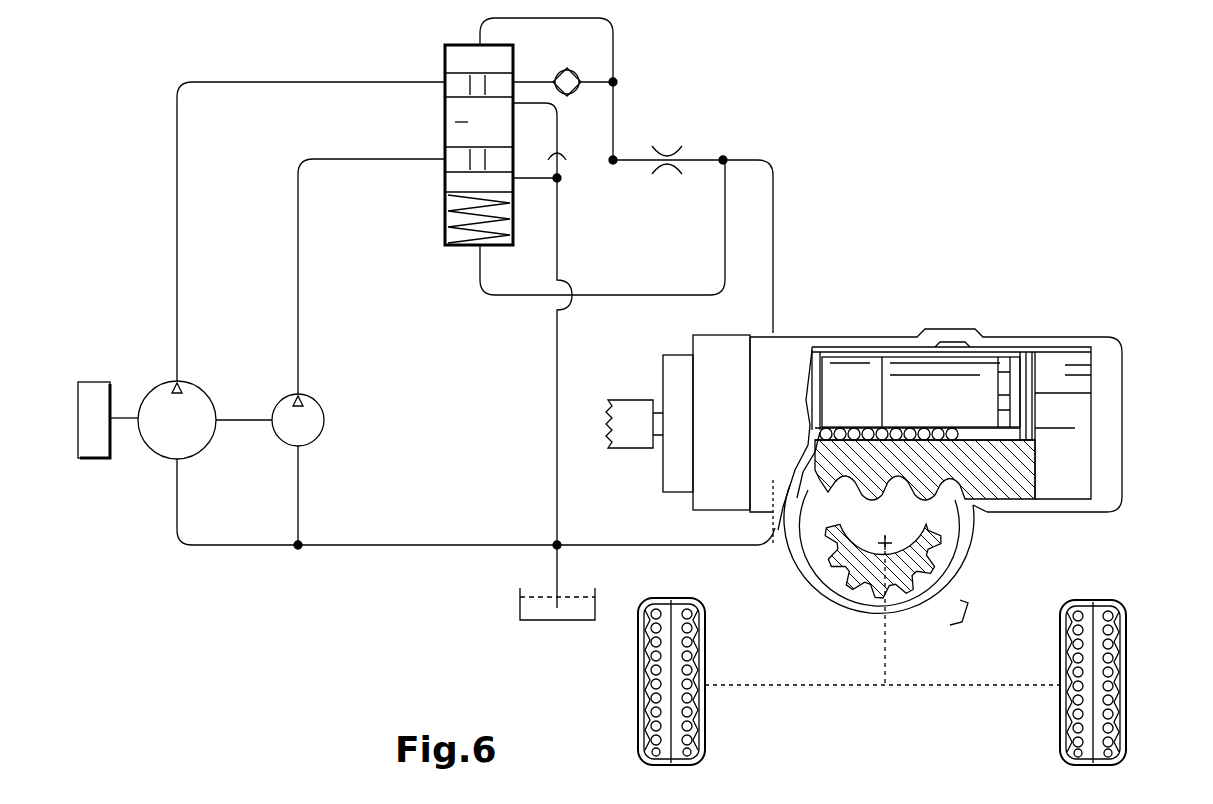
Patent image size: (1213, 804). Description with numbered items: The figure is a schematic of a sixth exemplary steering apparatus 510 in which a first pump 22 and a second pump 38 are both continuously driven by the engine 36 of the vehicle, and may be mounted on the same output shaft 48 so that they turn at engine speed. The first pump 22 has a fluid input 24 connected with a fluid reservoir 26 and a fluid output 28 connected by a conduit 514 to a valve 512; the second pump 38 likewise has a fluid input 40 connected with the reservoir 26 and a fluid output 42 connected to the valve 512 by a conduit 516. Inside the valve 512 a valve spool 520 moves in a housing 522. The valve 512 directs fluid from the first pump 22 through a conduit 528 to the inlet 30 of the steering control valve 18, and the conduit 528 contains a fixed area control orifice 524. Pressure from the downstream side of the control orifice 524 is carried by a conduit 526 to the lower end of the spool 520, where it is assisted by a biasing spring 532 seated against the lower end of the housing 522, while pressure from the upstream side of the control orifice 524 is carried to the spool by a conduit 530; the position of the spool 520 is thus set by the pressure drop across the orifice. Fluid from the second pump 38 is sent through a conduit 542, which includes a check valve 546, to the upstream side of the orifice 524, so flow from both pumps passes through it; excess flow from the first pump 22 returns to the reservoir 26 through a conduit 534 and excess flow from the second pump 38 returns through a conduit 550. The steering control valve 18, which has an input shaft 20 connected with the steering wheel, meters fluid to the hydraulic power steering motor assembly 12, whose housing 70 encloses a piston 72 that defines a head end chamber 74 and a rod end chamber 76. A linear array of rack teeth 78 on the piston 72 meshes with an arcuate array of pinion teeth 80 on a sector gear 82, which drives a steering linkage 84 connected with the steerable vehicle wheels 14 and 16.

The steering apparatus 510 is at (1024, 94).
The valve 512 is at (447, 47).
The conduit 514 is at (300, 271).
The conduit 516 is at (275, 80).
The valve spool 520 is at (468, 122).
The housing 522 is at (512, 48).
The fixed area control orifice 524 is at (682, 155).
The conduit 526 is at (516, 298).
The conduit 528 is at (775, 225).
The conduit 530 is at (616, 40).
The biasing spring 532 is at (450, 219).
The conduit 534 is at (535, 182).
The conduit 542 is at (598, 86).
The check valve 546 is at (575, 80).
The conduit 550 is at (560, 125).
The hydraulic power steering motor assembly 12 is at (1134, 398).
The steerable vehicle wheel 14 is at (642, 735).
The steerable vehicle wheel 16 is at (1125, 735).
The steering control valve 18 is at (675, 493).
The input shaft 20 is at (628, 434).
The first pump 22 is at (312, 430).
The fluid input 24 is at (302, 450).
The fluid reservoir 26 is at (545, 613).
The fluid output 28 is at (300, 405).
The inlet 30 is at (775, 333).
The engine 36 is at (92, 442).
The second pump 38 is at (168, 413).
The fluid input 40 is at (180, 461).
The fluid output 42 is at (180, 390).
The output shaft 48 is at (122, 420).
The housing 70 is at (1048, 337).
The piston 72 is at (905, 380).
The head end chamber 74 is at (807, 482).
The rod end chamber 76 is at (1073, 467).
The linear array of rack teeth 78 is at (975, 505).
The pinion teeth 80 is at (975, 545).
The sector gear 82 is at (865, 555).
The steering linkage 84 is at (888, 636).